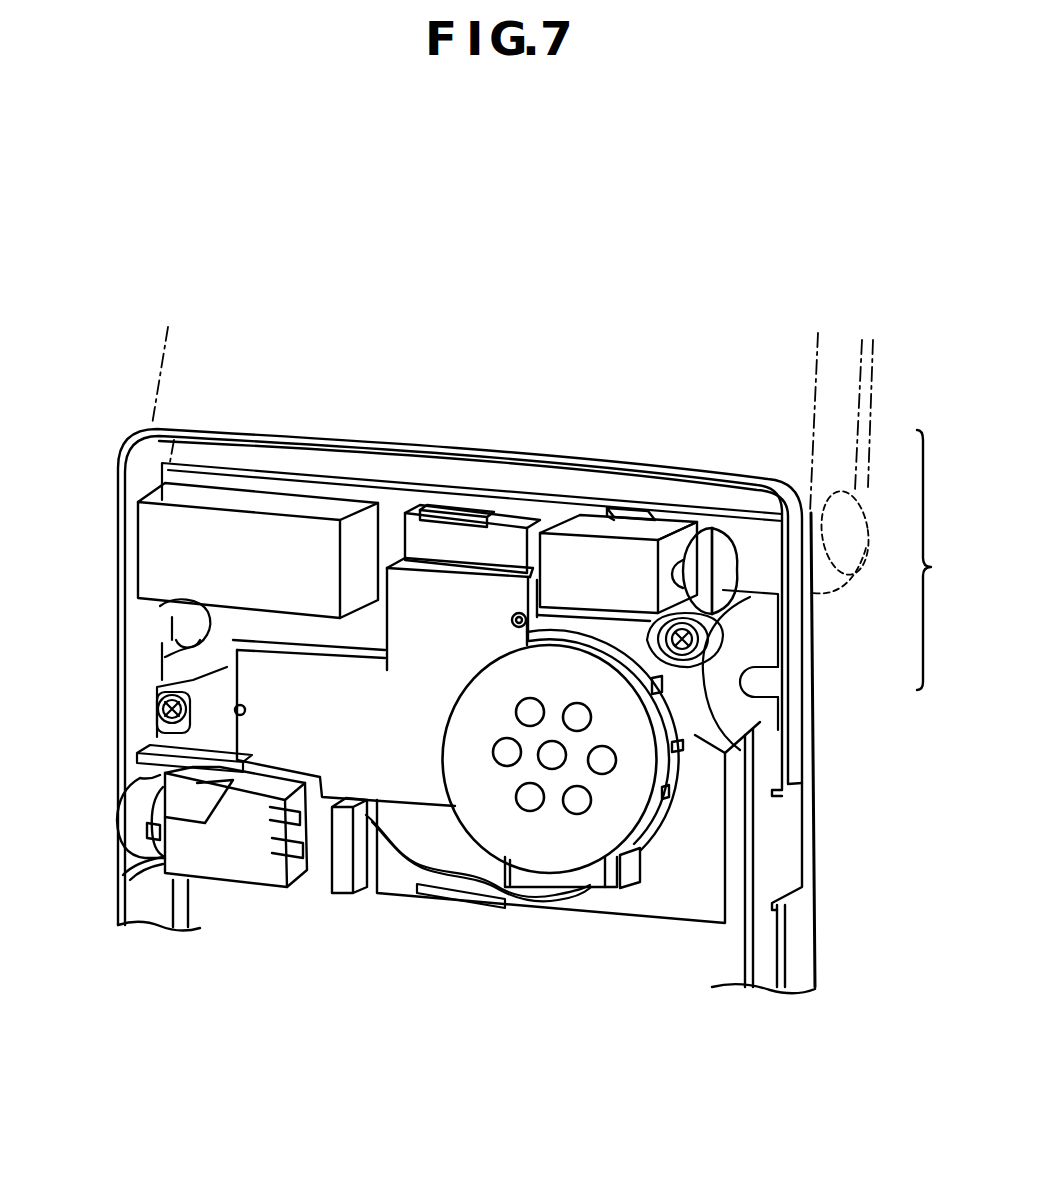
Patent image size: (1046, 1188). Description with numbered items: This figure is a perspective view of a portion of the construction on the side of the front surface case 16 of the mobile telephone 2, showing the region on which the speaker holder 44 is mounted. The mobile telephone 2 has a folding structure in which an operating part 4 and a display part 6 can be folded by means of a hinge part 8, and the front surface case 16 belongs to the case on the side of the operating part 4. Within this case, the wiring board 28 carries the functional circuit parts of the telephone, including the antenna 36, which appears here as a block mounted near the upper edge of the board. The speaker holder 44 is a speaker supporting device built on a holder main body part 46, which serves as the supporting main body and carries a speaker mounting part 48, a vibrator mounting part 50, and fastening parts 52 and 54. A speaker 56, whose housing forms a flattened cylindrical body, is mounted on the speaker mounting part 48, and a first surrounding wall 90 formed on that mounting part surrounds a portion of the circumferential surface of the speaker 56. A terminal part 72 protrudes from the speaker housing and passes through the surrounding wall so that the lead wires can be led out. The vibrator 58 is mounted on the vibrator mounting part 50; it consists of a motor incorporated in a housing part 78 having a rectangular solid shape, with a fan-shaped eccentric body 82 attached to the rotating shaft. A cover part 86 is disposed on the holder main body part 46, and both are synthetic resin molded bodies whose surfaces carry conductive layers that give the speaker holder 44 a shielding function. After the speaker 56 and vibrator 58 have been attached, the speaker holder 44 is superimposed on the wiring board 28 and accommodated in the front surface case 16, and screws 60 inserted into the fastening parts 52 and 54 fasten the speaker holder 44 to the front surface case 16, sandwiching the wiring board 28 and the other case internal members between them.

The mobile telephone 2 is at (961, 587).
The operating part 4 is at (813, 675).
The display part 6 is at (868, 456).
The hinge part 8 is at (862, 548).
The front surface case 16 is at (118, 522).
The wiring board 28 is at (217, 630).
The antenna 36 is at (277, 502).
The speaker holder 44 is at (547, 397).
The holder main body part 46 is at (437, 537).
The speaker mounting part 48 is at (655, 806).
The vibrator mounting part 50 is at (553, 513).
The fastening part 52 is at (694, 642).
The fastening part 54 is at (158, 688).
The speaker 56 is at (648, 838).
The vibrator 58 is at (595, 517).
The screw 60 is at (158, 708).
The terminal part 72 is at (590, 878).
The housing part 78 is at (617, 513).
The eccentric body 82 is at (722, 527).
The cover part 86 is at (495, 573).
The first surrounding wall 90 is at (663, 845).